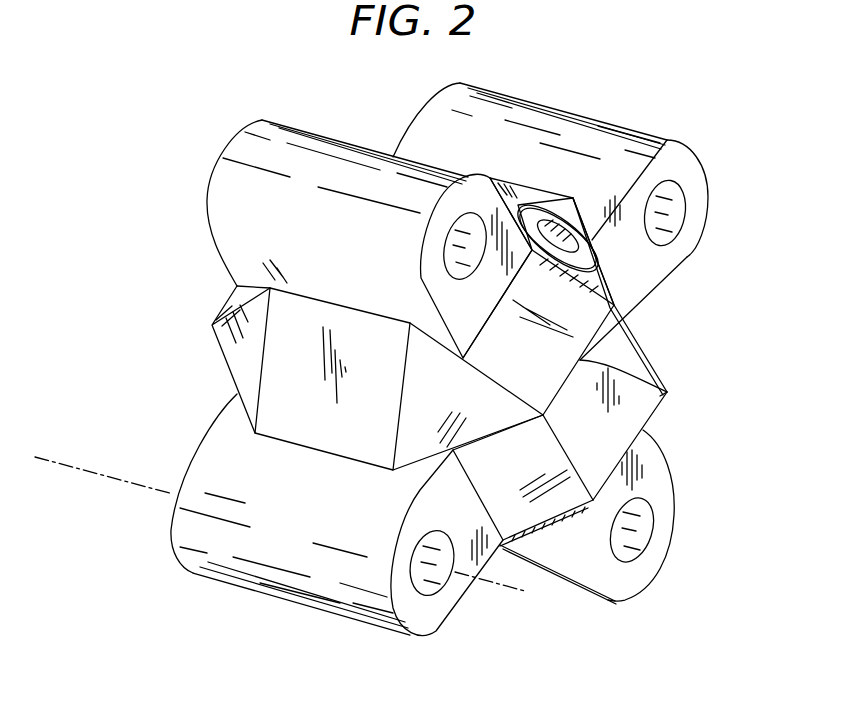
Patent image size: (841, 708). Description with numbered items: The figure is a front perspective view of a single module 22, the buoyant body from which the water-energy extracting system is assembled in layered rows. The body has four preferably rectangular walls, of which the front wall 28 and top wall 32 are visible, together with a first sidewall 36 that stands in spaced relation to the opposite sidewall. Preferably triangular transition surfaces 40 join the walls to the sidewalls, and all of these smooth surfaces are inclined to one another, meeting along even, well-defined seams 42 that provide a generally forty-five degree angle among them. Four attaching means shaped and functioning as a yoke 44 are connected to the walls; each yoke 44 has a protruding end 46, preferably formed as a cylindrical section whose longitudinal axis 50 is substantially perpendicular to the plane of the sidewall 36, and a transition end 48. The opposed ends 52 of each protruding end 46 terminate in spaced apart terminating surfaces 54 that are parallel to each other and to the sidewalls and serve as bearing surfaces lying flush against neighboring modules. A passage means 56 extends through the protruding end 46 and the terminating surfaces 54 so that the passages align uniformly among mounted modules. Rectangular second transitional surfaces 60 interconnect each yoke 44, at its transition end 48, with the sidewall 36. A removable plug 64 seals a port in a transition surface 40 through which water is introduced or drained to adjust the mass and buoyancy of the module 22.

The module 22 is at (203, 124).
The front wall 28 is at (346, 442).
The top wall 32 is at (533, 197).
The first sidewall 36 is at (586, 461).
The transition surfaces 40 is at (234, 370).
The seams 42 is at (660, 408).
The yoke 44 is at (291, 257).
The protruding end 46 is at (250, 567).
The transition end 48 is at (643, 307).
The longitudinal axis 50 is at (106, 480).
The opposed ends 52 is at (206, 194).
The terminating surfaces 54 is at (451, 323).
The passage means 56 is at (670, 225).
The second transitional surfaces 60 is at (521, 374).
The removable plug 64 is at (600, 282).